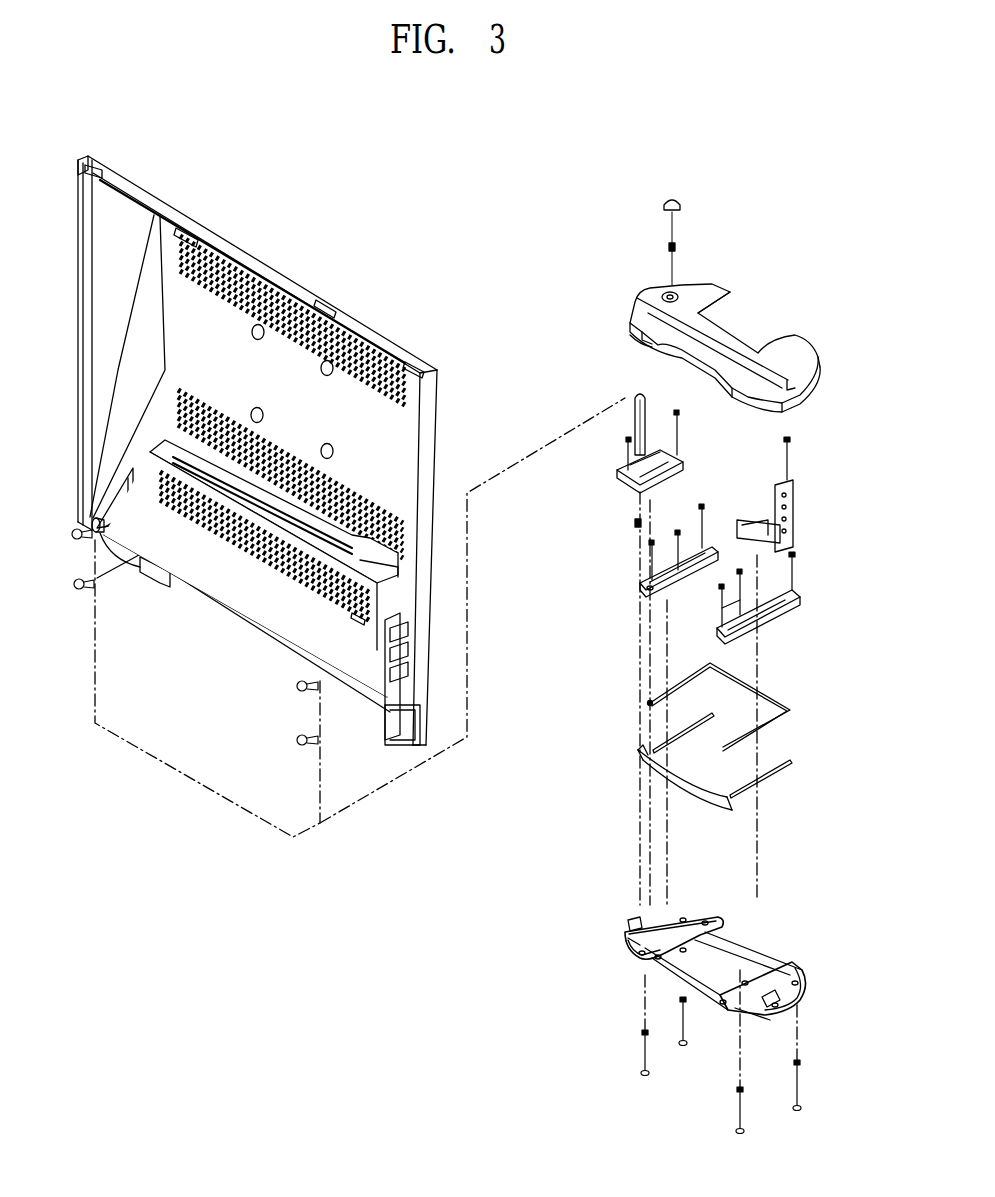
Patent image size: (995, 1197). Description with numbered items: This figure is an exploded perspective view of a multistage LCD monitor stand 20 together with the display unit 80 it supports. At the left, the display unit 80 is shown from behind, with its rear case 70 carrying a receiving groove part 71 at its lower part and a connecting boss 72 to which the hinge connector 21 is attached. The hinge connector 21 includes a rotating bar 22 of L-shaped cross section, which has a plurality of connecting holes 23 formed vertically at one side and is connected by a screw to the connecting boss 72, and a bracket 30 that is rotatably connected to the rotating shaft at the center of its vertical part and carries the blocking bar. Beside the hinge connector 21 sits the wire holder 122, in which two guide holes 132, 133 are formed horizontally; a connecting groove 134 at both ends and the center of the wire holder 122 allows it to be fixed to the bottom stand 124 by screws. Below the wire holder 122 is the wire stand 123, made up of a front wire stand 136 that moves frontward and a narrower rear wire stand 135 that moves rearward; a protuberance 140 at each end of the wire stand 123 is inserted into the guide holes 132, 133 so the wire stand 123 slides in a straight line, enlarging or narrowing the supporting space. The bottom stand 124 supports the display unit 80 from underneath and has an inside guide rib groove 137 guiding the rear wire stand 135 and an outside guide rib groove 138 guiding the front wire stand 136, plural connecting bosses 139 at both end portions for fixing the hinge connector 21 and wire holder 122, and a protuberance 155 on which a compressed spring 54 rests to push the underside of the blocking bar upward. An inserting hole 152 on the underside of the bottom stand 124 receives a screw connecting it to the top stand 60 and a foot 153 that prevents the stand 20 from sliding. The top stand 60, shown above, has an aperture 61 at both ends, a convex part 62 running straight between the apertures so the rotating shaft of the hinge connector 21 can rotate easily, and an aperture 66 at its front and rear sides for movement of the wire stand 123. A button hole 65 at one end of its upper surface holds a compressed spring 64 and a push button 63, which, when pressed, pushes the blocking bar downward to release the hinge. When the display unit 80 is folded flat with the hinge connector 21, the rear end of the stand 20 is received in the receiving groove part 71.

The LCD monitor stand 20 is at (127, 99).
The display unit 80 is at (298, 252).
The rear case 70 is at (300, 290).
The receiving groove part 71 is at (388, 588).
The connecting boss 72 is at (398, 678).
The top stand 60 is at (710, 328).
The aperture 61 is at (812, 387).
The convex part 62 is at (658, 290).
The push button 63 is at (680, 200).
The compressed spring 64 is at (677, 247).
The button hole 65 is at (700, 285).
The aperture 66 is at (645, 345).
The hinge connector 21 is at (625, 447).
The rotating bar 22 is at (648, 408).
The bracket 30 is at (612, 492).
The connecting holes 23 is at (792, 507).
The compressed spring 54 is at (632, 522).
The wire holder 122 is at (700, 574).
The guide hole 132 is at (665, 565).
The guide hole 133 is at (640, 588).
The connecting groove 134 is at (790, 598).
The wire stand 123 is at (705, 728).
The rear wire stand 135 is at (768, 692).
The protuberance 140 is at (648, 702).
The front wire stand 136 is at (790, 768).
The bottom stand 124 is at (698, 997).
The inside guide rib groove 137 is at (715, 916).
The outside guide rib groove 138 is at (640, 965).
The connecting boss 139 is at (630, 936).
The protuberance 155 is at (638, 922).
The inserting hole 152 is at (775, 1020).
The foot 153 is at (640, 1070).